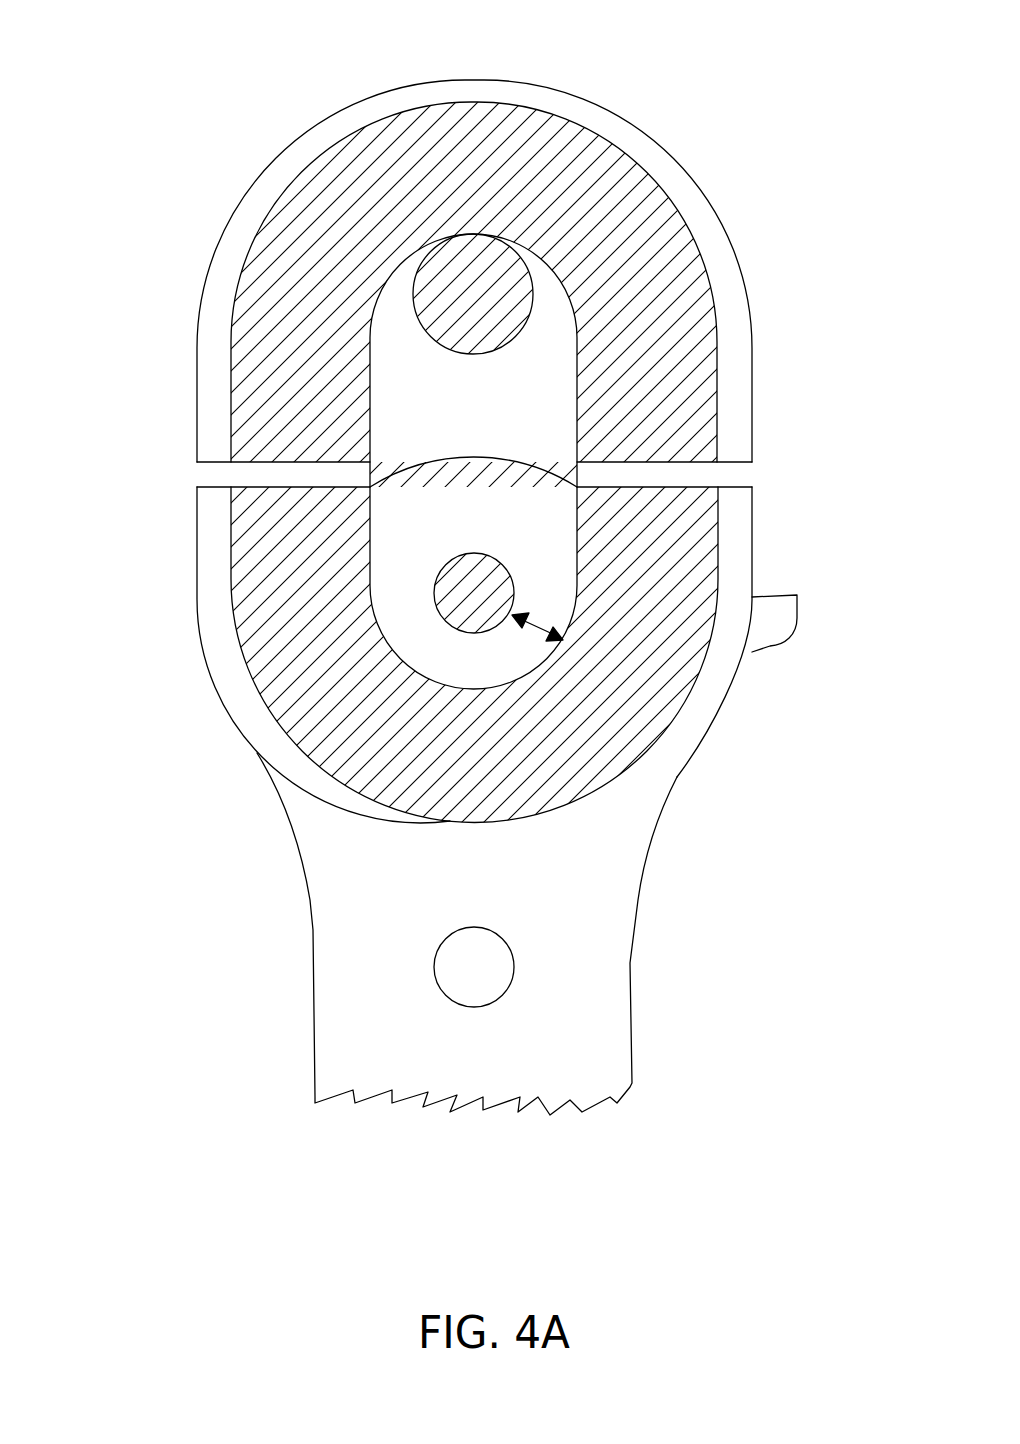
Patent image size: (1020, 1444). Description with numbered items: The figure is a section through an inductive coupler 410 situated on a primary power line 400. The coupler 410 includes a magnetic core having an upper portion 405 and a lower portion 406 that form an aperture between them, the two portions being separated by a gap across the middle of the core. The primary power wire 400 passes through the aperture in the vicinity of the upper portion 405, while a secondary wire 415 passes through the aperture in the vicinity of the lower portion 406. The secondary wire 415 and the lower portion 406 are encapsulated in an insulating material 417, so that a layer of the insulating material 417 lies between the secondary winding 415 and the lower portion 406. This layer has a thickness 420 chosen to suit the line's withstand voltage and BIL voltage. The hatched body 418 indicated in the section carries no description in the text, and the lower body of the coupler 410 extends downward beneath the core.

The primary power line 400 is at (533, 320).
The upper portion 405 is at (363, 127).
The lower portion 406 is at (232, 512).
The coupler 410 is at (187, 130).
The secondary wire 415 is at (440, 937).
The insulating material 417 is at (577, 573).
The insert body 418 is at (592, 122).
The thickness 420 is at (535, 627).